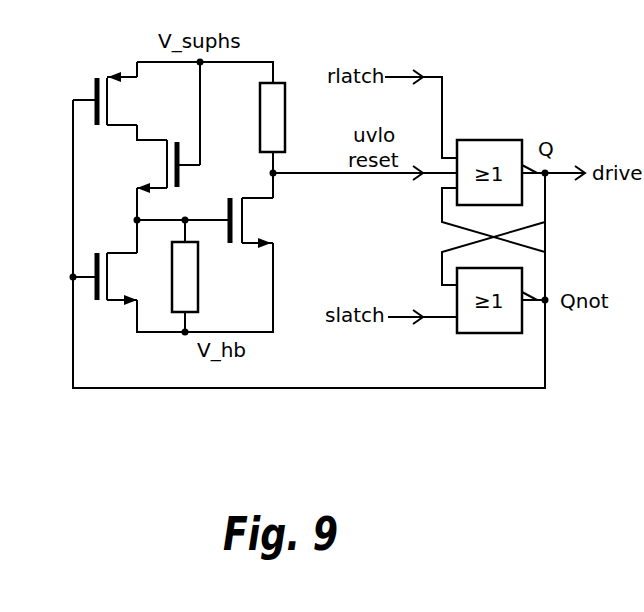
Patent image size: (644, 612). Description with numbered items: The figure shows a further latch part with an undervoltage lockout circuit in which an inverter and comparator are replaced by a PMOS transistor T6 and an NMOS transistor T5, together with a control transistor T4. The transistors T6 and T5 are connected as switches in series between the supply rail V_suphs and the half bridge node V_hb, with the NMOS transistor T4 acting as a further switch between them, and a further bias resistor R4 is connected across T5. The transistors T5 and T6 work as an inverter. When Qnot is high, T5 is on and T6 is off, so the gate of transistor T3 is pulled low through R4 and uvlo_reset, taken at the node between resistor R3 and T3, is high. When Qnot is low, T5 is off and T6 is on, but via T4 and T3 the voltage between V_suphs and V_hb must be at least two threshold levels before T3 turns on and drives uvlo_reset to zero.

The transistor T3 is at (262, 223).
The control transistor T4 is at (158, 166).
The NMOS transistor T5 is at (112, 279).
The PMOS transistor T6 is at (111, 98).
The resistor R3 is at (252, 117).
The bias resistor R4 is at (205, 277).